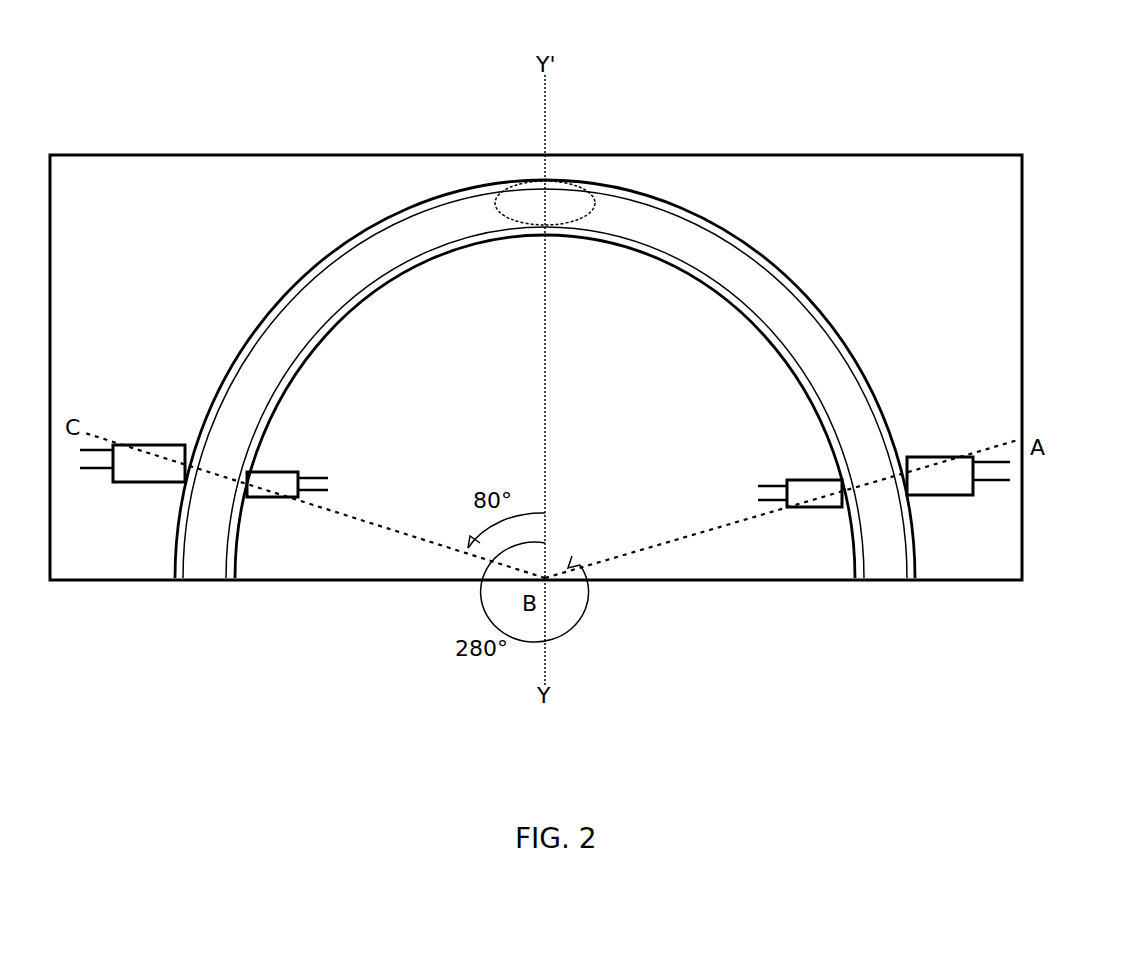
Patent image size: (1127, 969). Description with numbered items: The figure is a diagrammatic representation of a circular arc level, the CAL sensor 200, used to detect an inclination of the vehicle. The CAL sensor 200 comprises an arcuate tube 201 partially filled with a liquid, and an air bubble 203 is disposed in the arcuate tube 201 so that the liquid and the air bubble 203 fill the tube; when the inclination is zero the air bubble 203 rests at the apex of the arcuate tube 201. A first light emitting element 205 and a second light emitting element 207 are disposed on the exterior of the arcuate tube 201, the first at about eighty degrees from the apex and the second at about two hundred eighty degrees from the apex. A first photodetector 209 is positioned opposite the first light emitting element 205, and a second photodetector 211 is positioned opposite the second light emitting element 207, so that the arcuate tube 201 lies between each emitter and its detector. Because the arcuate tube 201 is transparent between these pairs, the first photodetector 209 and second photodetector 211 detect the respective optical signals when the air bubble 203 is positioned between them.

The CAL sensor 200 is at (1058, 146).
The arcuate tube 201 is at (758, 257).
The air bubble 203 is at (562, 180).
The first light emitting element 205 is at (280, 472).
The second light emitting element 207 is at (800, 480).
The first photodetector 209 is at (175, 443).
The second photodetector 211 is at (912, 457).